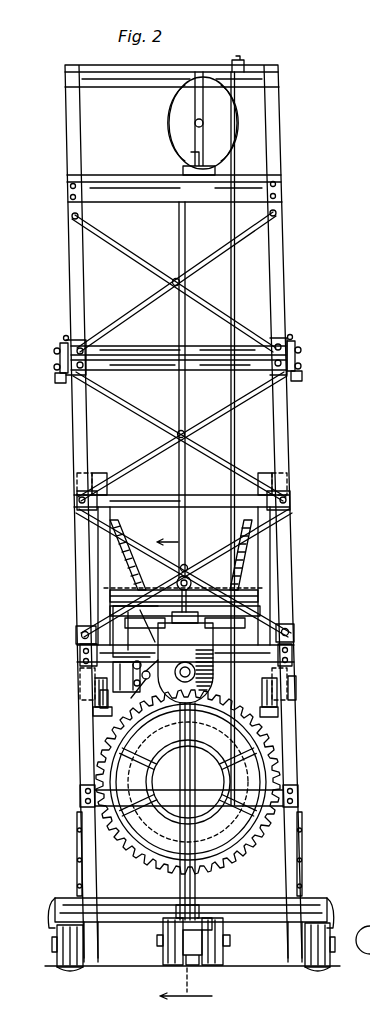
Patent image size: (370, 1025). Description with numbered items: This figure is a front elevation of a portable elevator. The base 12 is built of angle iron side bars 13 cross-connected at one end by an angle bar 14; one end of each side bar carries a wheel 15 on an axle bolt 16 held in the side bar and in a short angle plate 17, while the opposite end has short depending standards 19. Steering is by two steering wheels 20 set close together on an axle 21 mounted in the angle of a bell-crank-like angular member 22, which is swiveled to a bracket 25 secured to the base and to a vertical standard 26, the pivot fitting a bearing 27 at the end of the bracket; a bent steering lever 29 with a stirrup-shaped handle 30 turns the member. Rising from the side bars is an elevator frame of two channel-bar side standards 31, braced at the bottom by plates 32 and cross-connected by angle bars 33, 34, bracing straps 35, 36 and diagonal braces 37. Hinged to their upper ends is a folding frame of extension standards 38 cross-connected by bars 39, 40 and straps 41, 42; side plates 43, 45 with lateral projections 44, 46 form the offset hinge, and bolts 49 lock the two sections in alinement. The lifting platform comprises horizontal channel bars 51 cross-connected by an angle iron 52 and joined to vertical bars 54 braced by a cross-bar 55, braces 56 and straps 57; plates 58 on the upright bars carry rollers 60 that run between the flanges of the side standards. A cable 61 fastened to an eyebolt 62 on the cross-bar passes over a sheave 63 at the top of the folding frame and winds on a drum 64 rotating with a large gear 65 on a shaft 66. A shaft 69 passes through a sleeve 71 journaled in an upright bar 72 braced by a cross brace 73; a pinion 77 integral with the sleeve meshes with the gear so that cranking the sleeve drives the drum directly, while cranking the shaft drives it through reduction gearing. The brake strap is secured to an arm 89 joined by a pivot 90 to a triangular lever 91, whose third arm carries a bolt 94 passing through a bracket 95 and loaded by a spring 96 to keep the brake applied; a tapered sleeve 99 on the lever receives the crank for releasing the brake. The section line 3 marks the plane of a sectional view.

The section line 3 is at (184, 769).
The base 12 is at (328, 912).
The side bars 13 is at (91, 963).
The angle bar 14 is at (228, 905).
The wheel 15 is at (66, 967).
The axle bolt 16 is at (53, 950).
The angle plate 17 is at (54, 900).
The depending standards 19 is at (75, 968).
The steering wheels 20 is at (172, 966).
The axle 21 is at (232, 940).
The angular member 22 is at (192, 958).
The bracket 25 is at (204, 917).
The vertical standard 26 is at (178, 872).
The bearing 27 is at (356, 966).
The steering lever 29 is at (163, 860).
The stirrup-shaped handle 30 is at (252, 611).
The side standards 31 is at (80, 788).
The plates 32 is at (77, 840).
The angle bar 33 is at (299, 796).
The angle bar 34 is at (293, 653).
The bracing strap 35 is at (150, 500).
The bracing strap 36 is at (160, 370).
The diagonal braces 37 is at (166, 584).
The extension standards 38 is at (67, 278).
The bar 39 is at (137, 181).
The bar 40 is at (138, 80).
The strap 41 is at (142, 347).
The strap 42 is at (150, 297).
The side plate 43 is at (65, 336).
The side projection 44 is at (84, 342).
The side plate 45 is at (59, 383).
The side projection 46 is at (56, 369).
The bolts 49 is at (60, 352).
The channel bars 51 is at (93, 713).
The angle iron 52 is at (296, 688).
The vertical bars 54 is at (98, 560).
The cross-bar 55 is at (258, 596).
The braces 56 is at (128, 566).
The straps 57 is at (144, 457).
The plates 58 is at (99, 473).
The rollers 60 is at (77, 482).
The cable 61 is at (230, 228).
The eyebolt 62 is at (190, 579).
The sheave 63 is at (228, 104).
The drum 64 is at (283, 760).
The gear 65 is at (246, 848).
The shaft 66 is at (135, 843).
The shaft 69 is at (196, 712).
The sleeve 71 is at (205, 625).
The upright bar 72 is at (150, 747).
The cross brace 73 is at (240, 625).
The pinion 77 is at (214, 680).
The arm 89 is at (145, 652).
The pivot 90 is at (82, 633).
The triangular lever 91 is at (113, 676).
The bolt 94 is at (100, 699).
The bracket 95 is at (133, 690).
The spring 96 is at (147, 775).
The sleeve 99 is at (82, 653).